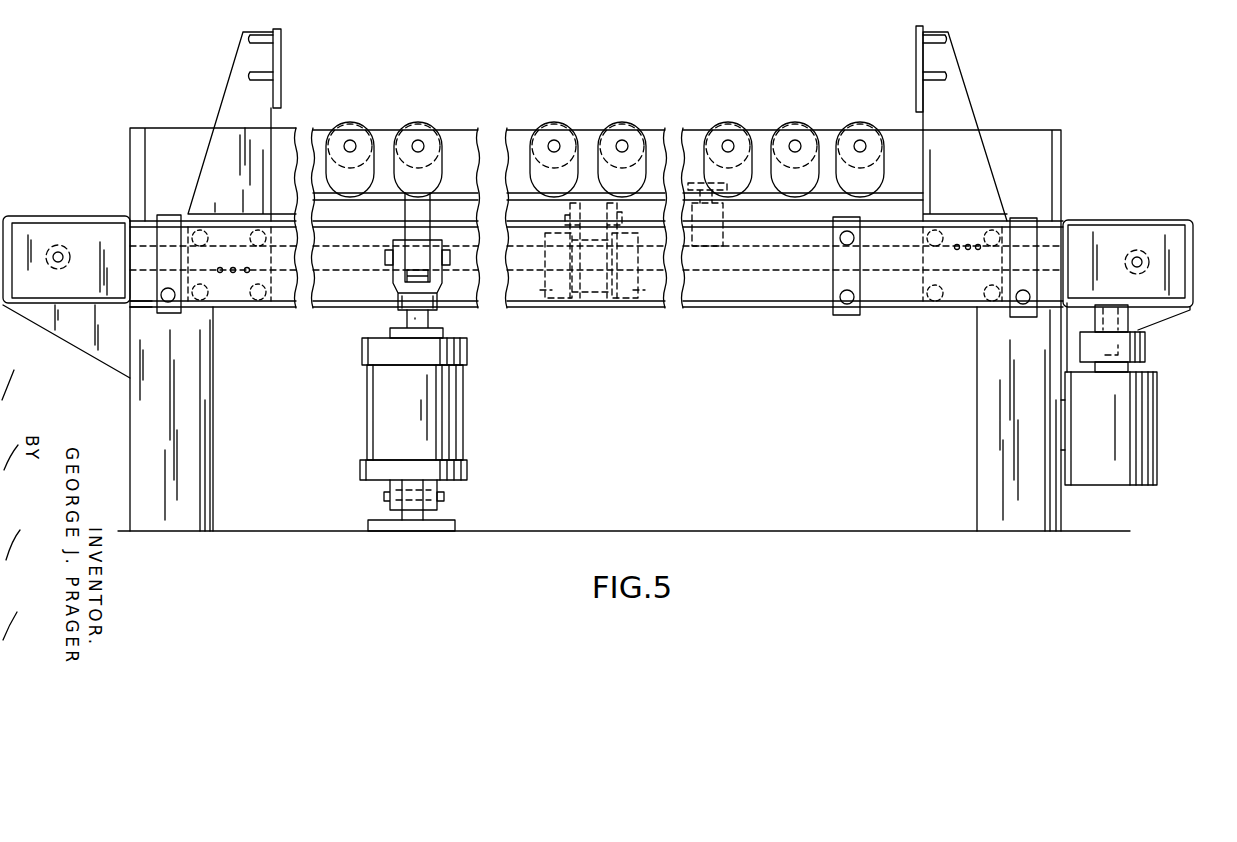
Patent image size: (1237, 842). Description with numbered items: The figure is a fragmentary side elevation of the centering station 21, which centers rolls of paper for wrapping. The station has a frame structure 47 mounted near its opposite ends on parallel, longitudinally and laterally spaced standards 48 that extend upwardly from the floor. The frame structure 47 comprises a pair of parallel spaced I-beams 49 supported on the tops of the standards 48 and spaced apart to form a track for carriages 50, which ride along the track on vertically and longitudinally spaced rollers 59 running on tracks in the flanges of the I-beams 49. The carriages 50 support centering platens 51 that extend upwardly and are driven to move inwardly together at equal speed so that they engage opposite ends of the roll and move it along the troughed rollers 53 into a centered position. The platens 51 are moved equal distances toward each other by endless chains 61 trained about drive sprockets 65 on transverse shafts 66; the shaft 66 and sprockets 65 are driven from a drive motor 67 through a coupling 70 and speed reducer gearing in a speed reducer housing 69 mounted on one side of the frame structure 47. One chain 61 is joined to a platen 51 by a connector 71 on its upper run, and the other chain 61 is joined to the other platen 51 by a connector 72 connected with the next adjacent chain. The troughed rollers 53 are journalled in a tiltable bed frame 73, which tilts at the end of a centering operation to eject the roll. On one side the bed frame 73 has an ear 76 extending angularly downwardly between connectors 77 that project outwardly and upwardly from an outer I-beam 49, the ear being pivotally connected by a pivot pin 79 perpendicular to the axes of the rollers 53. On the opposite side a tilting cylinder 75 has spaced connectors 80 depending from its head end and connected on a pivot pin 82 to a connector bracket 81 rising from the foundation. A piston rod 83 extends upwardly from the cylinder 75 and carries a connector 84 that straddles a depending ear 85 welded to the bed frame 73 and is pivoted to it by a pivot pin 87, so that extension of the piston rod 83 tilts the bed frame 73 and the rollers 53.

The centering station 21 is at (130, 163).
The frame structure 47 is at (780, 314).
The standards 48 is at (215, 458).
The I-beams 49 is at (578, 308).
The carriages 50 is at (283, 302).
The centering platens 51 is at (283, 60).
The troughed rollers 53 is at (358, 124).
The rollers 59 is at (200, 300).
The endless chains 61 is at (1090, 228).
The drive sprockets 65 is at (1125, 250).
The transverse shaft 66 is at (1141, 256).
The drive motor 67 is at (1115, 465).
The speed reducer housing 69 is at (1172, 300).
The coupling 70 is at (1147, 352).
The connector 71 is at (957, 250).
The connector 72 is at (233, 273).
The tiltable bed frame 73 is at (901, 124).
The tilting cylinder 75 is at (464, 432).
The ear 76 is at (614, 200).
The connectors 77 is at (544, 302).
The pivot pin 79 is at (565, 215).
The connectors 80 is at (388, 489).
The connector bracket 81 is at (456, 523).
The pivot pin 82 is at (441, 497).
The piston rod 83 is at (407, 319).
The connector 84 is at (390, 283).
The depending ear 85 is at (431, 207).
The pivot pin 87 is at (448, 257).